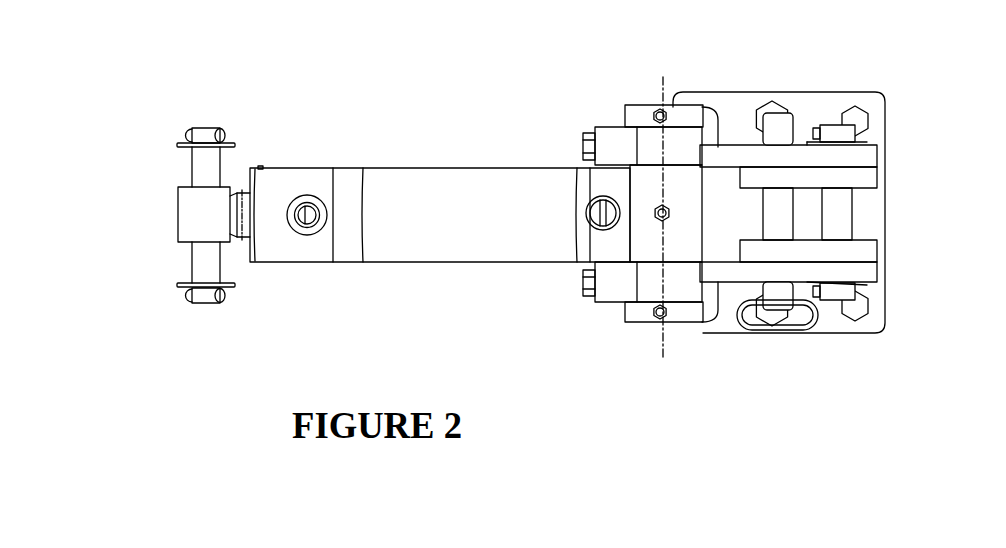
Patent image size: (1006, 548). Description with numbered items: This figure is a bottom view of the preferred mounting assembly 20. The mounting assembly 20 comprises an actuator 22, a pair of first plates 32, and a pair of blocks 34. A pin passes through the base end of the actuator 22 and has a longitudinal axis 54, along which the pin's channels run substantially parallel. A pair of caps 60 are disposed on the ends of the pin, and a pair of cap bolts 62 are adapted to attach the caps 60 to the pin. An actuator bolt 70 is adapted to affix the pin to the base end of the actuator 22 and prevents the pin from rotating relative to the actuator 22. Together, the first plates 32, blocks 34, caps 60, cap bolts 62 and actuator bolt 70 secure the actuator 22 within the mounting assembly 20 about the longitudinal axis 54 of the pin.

The mounting assembly 20 is at (403, 218).
The actuator 22 is at (408, 167).
The first plates 32 is at (862, 155).
The blocks 34 is at (613, 130).
The longitudinal axis 54 is at (662, 347).
The caps 60 is at (685, 115).
The cap bolts 62 is at (659, 107).
The actuator bolt 70 is at (656, 210).